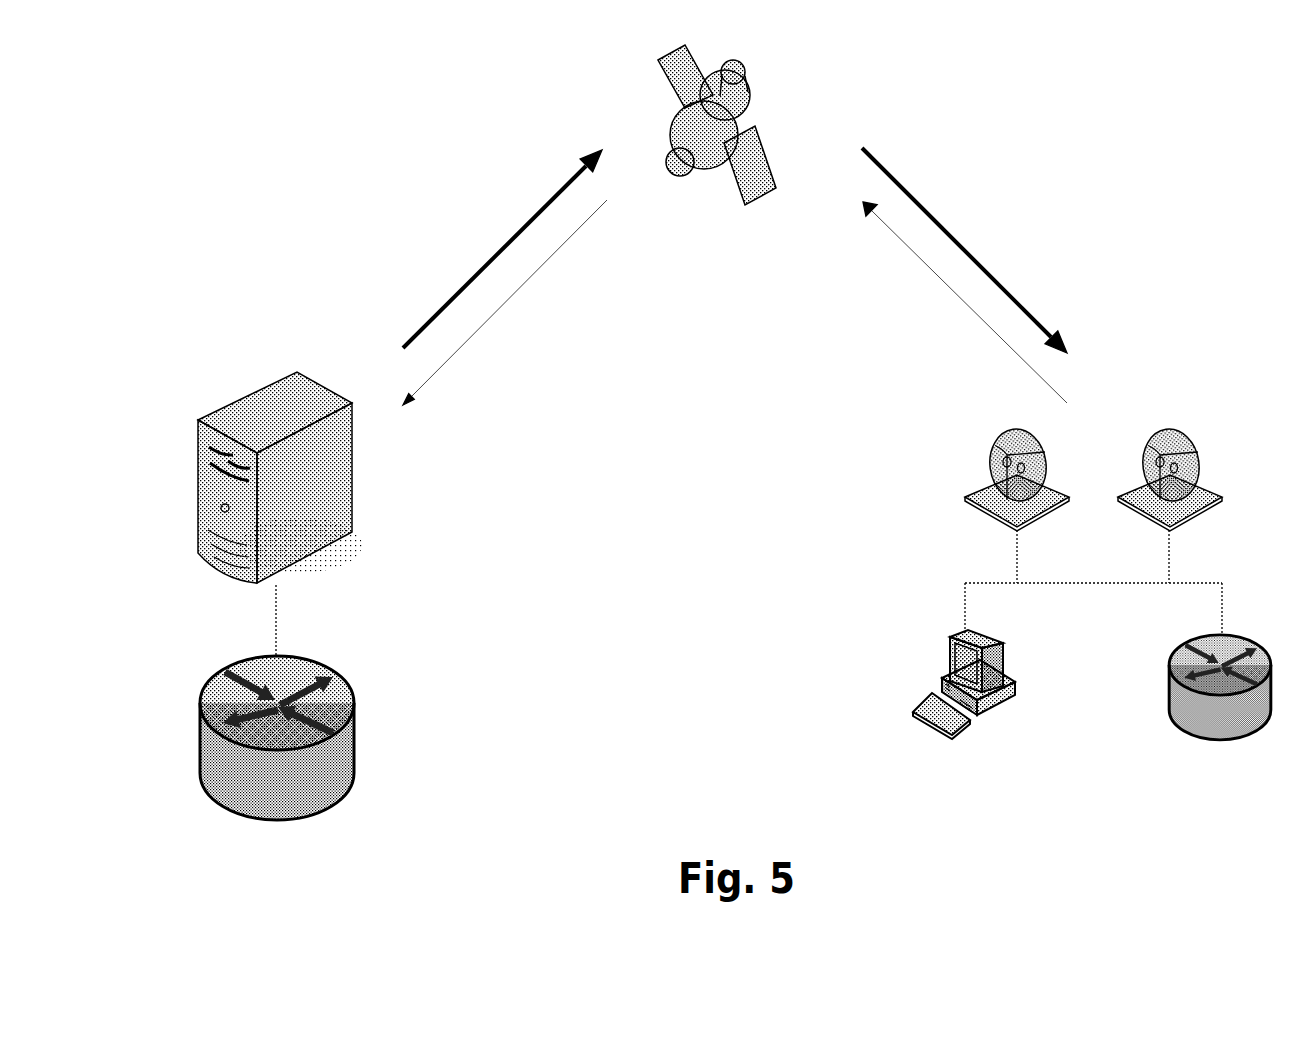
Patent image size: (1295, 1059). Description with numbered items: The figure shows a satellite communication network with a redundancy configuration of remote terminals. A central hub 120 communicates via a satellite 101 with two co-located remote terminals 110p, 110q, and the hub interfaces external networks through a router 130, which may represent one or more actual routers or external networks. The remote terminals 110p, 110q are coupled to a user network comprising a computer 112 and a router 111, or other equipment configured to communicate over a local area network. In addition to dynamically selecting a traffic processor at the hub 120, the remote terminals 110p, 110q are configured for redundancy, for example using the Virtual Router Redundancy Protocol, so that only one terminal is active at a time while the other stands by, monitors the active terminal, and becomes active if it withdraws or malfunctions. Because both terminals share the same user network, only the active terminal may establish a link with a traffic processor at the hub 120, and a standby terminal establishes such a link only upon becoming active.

The satellite 101 is at (737, 125).
The central hub 120 is at (280, 469).
The router 130 is at (277, 728).
The remote terminal 110p is at (1017, 468).
The remote terminal 110q is at (1170, 468).
The computer 112 is at (964, 695).
The router 111 is at (1220, 698).